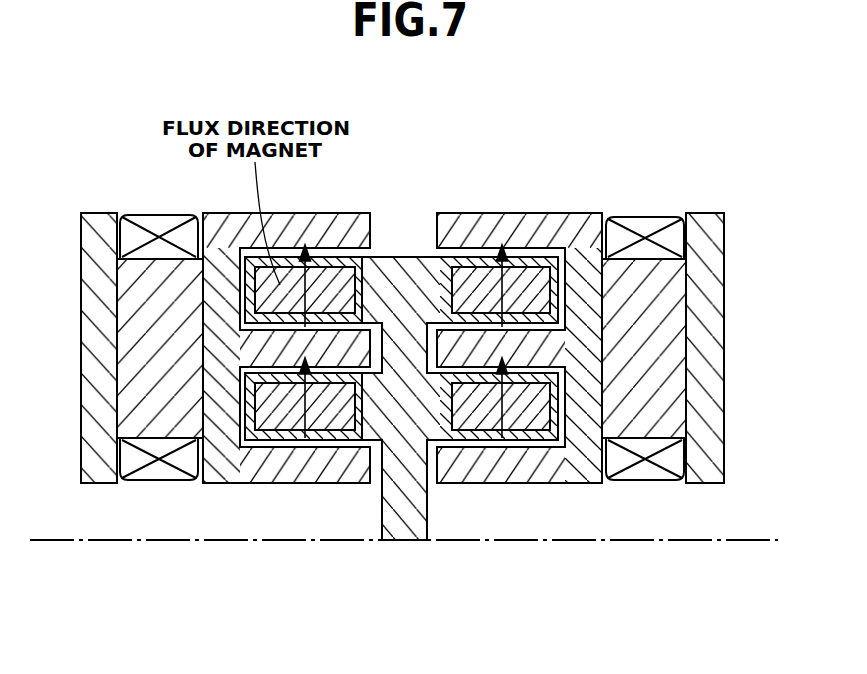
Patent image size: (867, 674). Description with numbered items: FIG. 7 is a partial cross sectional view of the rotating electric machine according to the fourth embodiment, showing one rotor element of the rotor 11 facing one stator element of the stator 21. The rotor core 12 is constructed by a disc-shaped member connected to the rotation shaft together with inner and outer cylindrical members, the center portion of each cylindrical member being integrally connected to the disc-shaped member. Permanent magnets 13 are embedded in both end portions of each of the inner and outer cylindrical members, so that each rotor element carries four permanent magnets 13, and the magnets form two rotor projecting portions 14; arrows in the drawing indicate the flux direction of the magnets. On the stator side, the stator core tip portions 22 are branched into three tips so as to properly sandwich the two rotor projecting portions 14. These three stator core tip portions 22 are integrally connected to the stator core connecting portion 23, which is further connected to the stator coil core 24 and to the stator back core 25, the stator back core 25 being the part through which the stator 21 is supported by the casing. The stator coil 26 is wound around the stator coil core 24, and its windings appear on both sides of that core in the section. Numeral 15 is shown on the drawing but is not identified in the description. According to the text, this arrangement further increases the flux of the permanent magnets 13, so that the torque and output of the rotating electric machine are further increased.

The rotor 11 is at (407, 250).
The rotor core 12 is at (405, 415).
The permanent magnet 13 is at (573, 226).
The rotor projecting portion 14 is at (280, 443).
The core end plate 15 is at (457, 255).
The stator 21 is at (710, 311).
The stator core tip portion 22 is at (527, 350).
The stator core connecting portion 23 is at (583, 455).
The stator coil core 24 is at (655, 322).
The stator back core 25 is at (705, 263).
The stator coil 26 is at (627, 237).